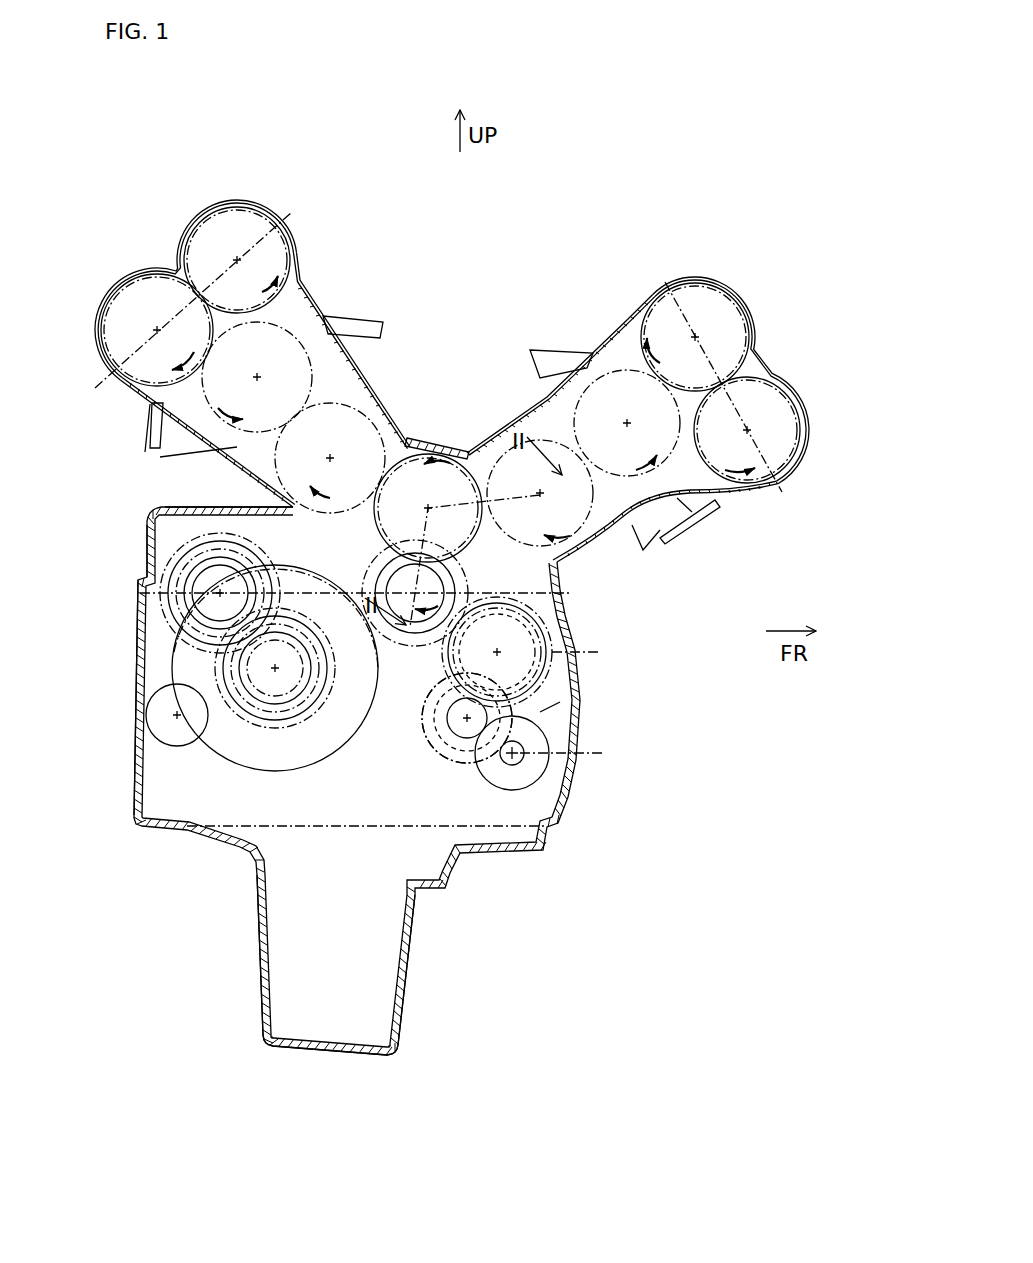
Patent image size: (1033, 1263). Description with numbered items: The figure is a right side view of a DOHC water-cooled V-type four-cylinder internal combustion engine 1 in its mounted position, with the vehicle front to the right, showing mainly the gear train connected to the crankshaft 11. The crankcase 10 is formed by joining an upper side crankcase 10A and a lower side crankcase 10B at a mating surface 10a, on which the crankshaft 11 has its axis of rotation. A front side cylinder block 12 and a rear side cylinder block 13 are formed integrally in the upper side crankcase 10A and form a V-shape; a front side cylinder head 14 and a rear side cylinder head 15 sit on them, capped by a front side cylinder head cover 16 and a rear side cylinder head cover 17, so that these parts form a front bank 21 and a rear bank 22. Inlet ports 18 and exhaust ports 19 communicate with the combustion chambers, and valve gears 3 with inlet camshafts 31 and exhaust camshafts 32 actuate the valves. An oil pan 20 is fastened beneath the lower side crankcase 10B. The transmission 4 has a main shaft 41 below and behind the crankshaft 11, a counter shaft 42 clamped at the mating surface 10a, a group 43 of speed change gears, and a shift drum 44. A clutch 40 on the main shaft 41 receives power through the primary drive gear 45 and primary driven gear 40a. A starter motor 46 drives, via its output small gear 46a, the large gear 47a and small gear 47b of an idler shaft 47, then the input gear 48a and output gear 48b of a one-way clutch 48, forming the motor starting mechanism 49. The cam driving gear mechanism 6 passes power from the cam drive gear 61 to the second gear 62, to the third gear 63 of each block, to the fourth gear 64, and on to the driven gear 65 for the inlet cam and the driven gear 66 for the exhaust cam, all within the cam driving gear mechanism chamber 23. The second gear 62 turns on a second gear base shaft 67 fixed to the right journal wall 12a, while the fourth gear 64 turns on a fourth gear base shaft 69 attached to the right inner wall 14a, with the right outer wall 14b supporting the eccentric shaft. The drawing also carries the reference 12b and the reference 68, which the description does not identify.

The internal combustion engine 1 is at (688, 242).
The valve gears 3 is at (178, 265).
The transmission 4 is at (240, 815).
The cam driving gear mechanism 6 is at (340, 382).
The crankcase 10 is at (66, 538).
The upper side crankcase 10A is at (150, 530).
The lower side crankcase 10B is at (142, 592).
The mating surface 10a is at (587, 620).
The crankshaft 11 is at (458, 587).
The front side cylinder block 12 is at (647, 550).
The right journal wall 12a is at (492, 445).
The cylinder 12b is at (504, 268).
The rear side cylinder block 13 is at (205, 497).
The front side cylinder head 14 is at (748, 495).
The right inner wall 14a is at (625, 350).
The right outer wall 14b is at (651, 190).
The rear side cylinder head 15 is at (132, 386).
The front side cylinder head cover 16 is at (803, 401).
The rear side cylinder head cover 17 is at (124, 283).
The inlet ports 18 is at (352, 318).
The exhaust ports 19 is at (148, 420).
The oil pan 20 is at (412, 992).
The front bank 21 is at (572, 233).
The rear bank 22 is at (368, 232).
The cam driving gear mechanism chamber 23 is at (360, 400).
The inlet camshafts 31 is at (237, 258).
The exhaust camshafts 32 is at (158, 328).
The clutch 40 is at (210, 760).
The primary driven gear 40a is at (335, 583).
The main shaft 41 is at (215, 680).
The counter shaft 42 is at (162, 608).
The group of speed change gears 43 is at (190, 660).
The shift drum 44 is at (152, 736).
The primary drive gear 45 is at (375, 575).
The starter motor 46 is at (558, 766).
The output small gear 46a is at (524, 753).
The idler shaft 47 is at (442, 752).
The large gear 47a is at (452, 727).
The small gear 47b is at (442, 708).
The one-way clutch 48 is at (676, 668).
The input gear 48a is at (560, 695).
The output gear 48b is at (557, 660).
The motor starting mechanism 49 is at (565, 709).
The cam drive gear 61 is at (452, 575).
The second gear 62 is at (597, 570).
The third gear 63 is at (200, 460).
The fourth gear 64 is at (152, 430).
The driven gear for the inlet cam 65 is at (181, 262).
The driven gear for the exhaust cam 66 is at (165, 262).
The second gear base shaft 67 is at (431, 507).
The idler sprocket 68 is at (332, 456).
The fourth gear base shaft 69 is at (258, 375).